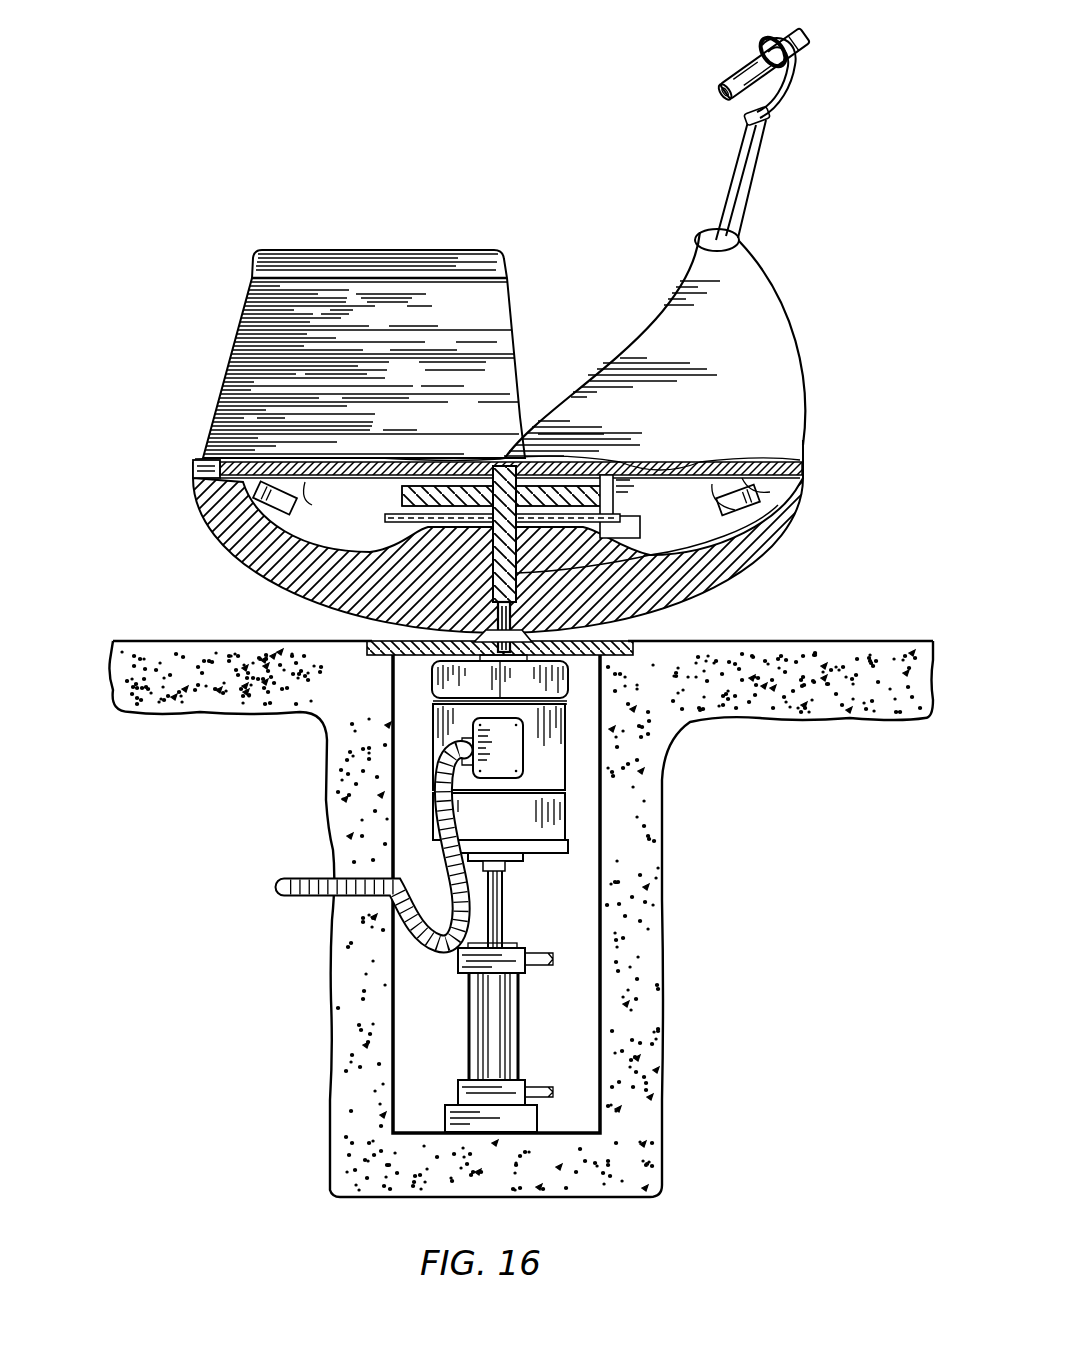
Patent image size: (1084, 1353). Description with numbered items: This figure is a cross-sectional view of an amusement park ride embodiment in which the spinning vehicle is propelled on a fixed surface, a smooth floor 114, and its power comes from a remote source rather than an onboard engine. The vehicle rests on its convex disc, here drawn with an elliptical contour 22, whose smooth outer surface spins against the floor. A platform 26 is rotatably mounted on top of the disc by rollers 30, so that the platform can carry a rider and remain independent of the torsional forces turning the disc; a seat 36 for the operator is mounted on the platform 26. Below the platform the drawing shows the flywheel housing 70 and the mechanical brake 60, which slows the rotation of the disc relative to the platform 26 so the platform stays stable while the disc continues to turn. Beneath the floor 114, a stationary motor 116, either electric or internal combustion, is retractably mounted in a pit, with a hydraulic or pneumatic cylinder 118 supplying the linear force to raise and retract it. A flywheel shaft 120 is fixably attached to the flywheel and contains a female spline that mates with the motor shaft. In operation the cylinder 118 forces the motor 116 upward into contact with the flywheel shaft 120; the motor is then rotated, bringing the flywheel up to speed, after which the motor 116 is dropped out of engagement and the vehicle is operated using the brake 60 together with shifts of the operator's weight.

The elliptical contour 22 is at (300, 588).
The platform 26 is at (200, 458).
The rollers 30 is at (225, 535).
The seat 36 is at (384, 250).
The mechanical brake 60 is at (715, 462).
The flywheel housing 70 is at (630, 460).
The smooth floor 114 is at (145, 640).
The stationary motor 116 is at (568, 755).
The hydraulic or pneumatic cylinder 118 is at (518, 1028).
The flywheel shaft 120 is at (705, 576).